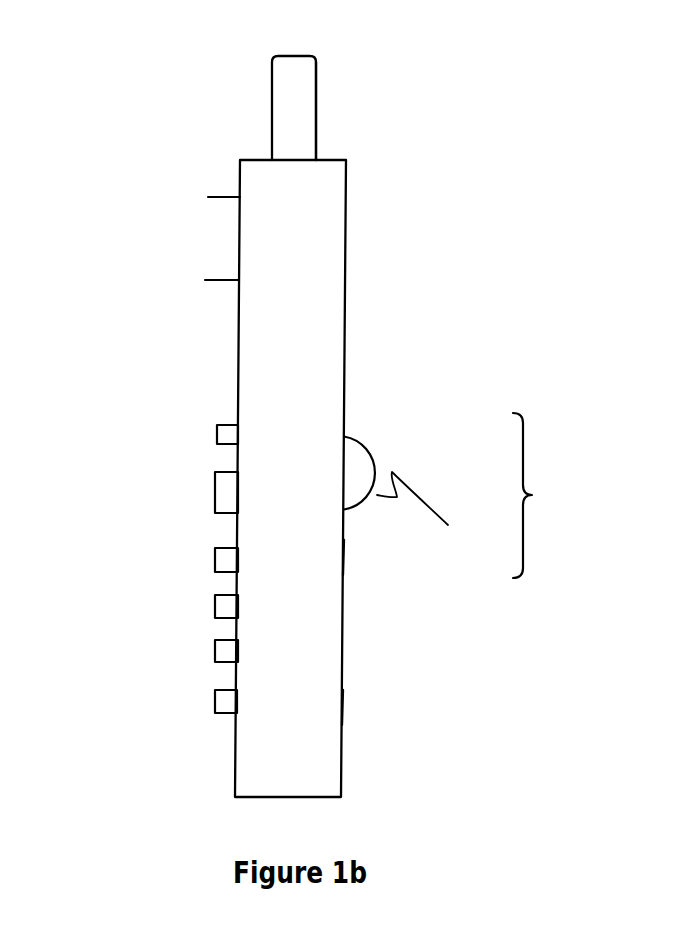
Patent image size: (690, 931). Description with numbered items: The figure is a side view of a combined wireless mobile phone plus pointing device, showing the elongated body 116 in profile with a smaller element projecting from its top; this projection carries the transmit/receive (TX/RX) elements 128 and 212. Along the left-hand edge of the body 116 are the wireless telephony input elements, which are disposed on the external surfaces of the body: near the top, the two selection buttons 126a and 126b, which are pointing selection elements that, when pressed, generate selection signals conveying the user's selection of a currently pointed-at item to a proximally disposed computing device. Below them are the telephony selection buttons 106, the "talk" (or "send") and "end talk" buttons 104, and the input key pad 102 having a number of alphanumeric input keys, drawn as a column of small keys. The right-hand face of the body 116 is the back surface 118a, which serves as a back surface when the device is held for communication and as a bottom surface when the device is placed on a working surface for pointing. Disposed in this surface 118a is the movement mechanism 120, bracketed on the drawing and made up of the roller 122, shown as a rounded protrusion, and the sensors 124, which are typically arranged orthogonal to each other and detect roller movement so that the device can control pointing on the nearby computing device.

The input key pad 102 is at (203, 567).
The talk and end talk buttons 104 is at (228, 487).
The selection buttons 106 is at (216, 425).
The body 116 is at (323, 362).
The back surface 118a is at (342, 708).
The movement mechanism 120 is at (535, 493).
The roller 122 is at (372, 453).
The sensors 124 is at (345, 557).
The selection button 126a is at (187, 189).
The selection button 126b is at (186, 274).
The transmit/receive (TX/RX) 128 is at (266, 156).
The transmit/receive (TX/RX) 212 is at (341, 158).